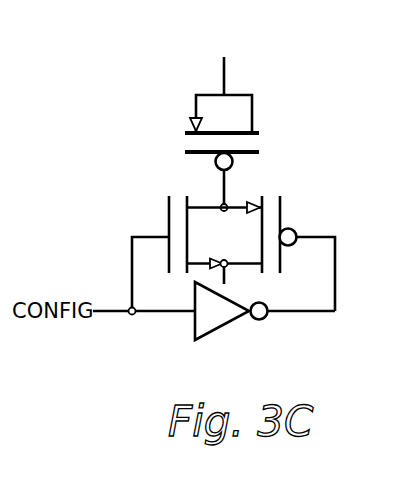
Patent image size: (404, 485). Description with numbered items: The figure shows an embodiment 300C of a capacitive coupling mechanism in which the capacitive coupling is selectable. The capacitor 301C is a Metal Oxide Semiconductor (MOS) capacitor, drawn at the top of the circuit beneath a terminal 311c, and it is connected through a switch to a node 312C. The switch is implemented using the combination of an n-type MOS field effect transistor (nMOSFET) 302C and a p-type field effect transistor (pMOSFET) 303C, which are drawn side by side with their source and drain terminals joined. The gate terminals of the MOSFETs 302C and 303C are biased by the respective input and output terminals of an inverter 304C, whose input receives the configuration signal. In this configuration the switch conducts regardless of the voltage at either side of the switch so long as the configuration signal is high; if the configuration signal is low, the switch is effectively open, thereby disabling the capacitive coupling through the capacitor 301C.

The capacitive coupling mechanism 300C is at (249, 47).
The supply voltage node 311c is at (226, 78).
The capacitor 301C is at (250, 143).
The nMOSFET 302C is at (198, 237).
The pMOSFET 303C is at (239, 236).
The storage node 312C is at (226, 281).
The inverter 304C is at (218, 317).